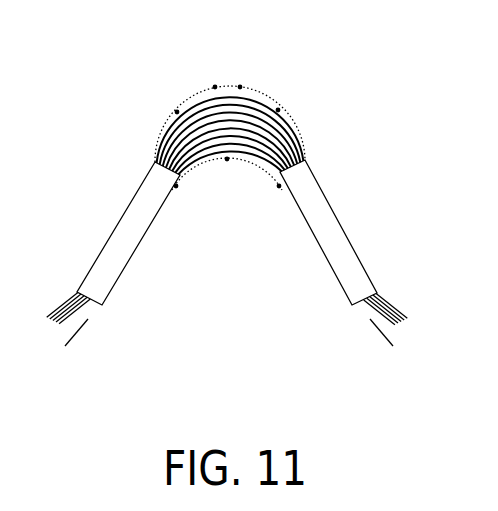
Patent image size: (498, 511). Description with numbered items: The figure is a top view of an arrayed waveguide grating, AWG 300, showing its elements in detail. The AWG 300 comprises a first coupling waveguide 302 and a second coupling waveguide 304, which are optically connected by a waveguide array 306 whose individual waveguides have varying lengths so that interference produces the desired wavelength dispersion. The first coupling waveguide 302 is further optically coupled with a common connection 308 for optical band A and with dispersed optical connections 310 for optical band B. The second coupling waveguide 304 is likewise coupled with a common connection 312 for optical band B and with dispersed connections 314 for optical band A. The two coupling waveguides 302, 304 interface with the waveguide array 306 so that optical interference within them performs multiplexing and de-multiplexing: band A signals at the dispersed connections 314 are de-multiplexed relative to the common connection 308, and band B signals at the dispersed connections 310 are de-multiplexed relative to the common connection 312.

The AWG 300 is at (238, 206).
The first coupling waveguide 302 is at (340, 220).
The second coupling waveguide 304 is at (128, 202).
The waveguide array 306 is at (241, 87).
The common connection 308 is at (372, 321).
The dispersed optical connections 310 is at (406, 301).
The common connection 312 is at (86, 321).
The dispersed connections 314 is at (45, 298).